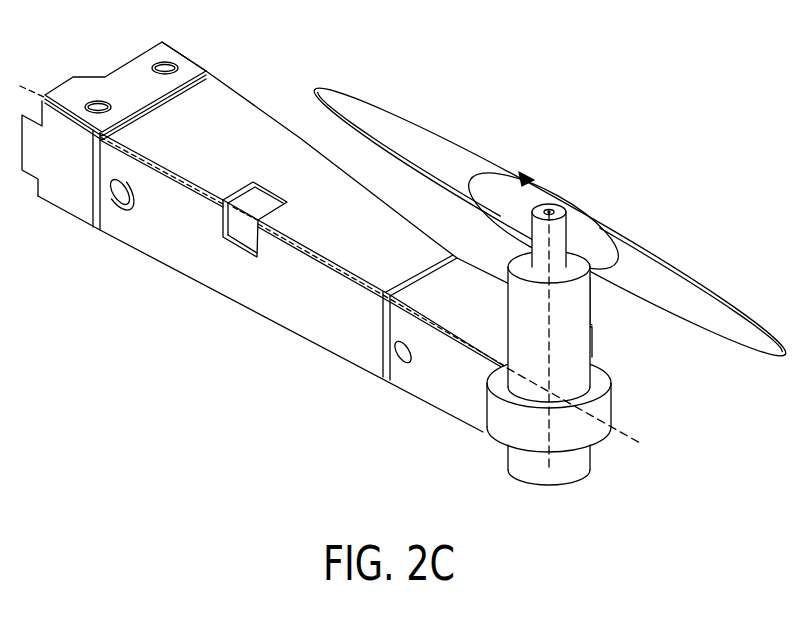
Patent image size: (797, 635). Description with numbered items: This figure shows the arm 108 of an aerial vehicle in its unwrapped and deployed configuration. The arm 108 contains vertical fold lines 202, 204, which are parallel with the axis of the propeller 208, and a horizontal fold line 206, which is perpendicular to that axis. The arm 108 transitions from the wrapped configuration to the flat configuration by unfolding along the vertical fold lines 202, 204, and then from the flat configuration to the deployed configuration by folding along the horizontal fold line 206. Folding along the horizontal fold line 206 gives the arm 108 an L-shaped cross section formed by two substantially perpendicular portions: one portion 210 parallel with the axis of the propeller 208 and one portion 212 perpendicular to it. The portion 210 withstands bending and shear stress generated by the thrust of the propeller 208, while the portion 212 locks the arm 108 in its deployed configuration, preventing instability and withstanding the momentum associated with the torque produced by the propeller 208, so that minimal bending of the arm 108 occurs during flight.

The arm 108 is at (235, 302).
The vertical fold line 202 is at (145, 97).
The vertical fold line 204 is at (380, 375).
The horizontal fold line 206 is at (632, 428).
The propeller 208 is at (427, 128).
The portion parallel with the propeller axis 210 is at (143, 237).
The portion perpendicular with the propeller axis 212 is at (238, 115).